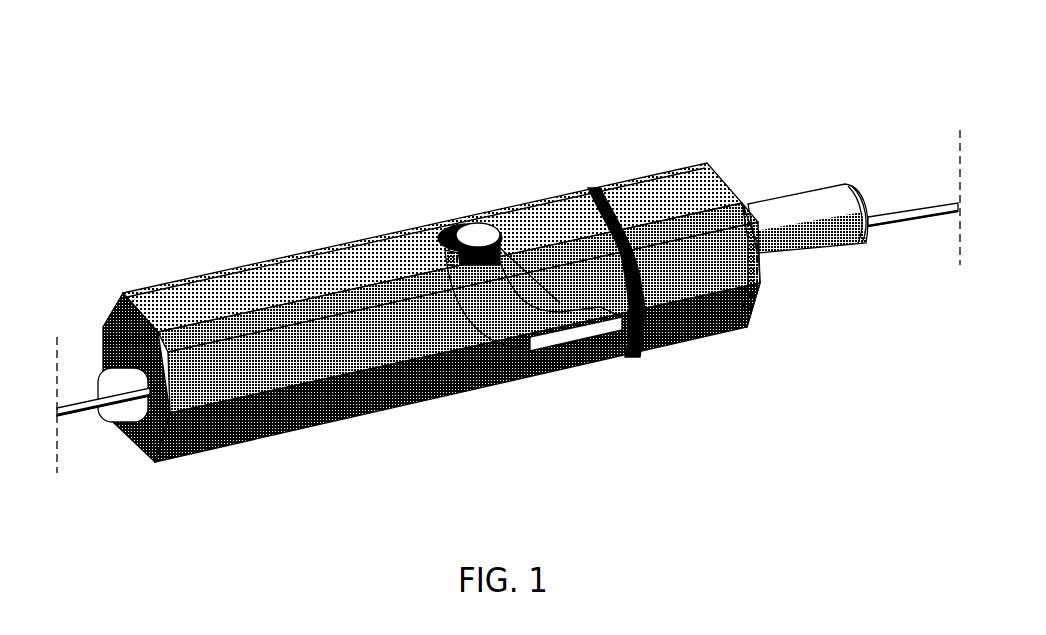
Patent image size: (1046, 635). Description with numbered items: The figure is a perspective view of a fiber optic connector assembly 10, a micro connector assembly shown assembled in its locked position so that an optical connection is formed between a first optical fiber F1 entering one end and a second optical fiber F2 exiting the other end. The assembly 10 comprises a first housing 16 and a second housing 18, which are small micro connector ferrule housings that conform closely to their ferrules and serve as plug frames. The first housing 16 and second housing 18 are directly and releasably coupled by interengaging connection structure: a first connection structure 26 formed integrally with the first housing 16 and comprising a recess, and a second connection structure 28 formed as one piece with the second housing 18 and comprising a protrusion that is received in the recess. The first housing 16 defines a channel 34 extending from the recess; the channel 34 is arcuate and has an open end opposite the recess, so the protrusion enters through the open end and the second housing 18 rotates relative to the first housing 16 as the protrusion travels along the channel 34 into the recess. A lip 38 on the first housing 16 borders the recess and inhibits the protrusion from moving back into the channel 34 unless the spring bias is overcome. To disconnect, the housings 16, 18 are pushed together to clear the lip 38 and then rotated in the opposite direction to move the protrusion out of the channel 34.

The fiber optic connector assembly 10 is at (507, 277).
The first housing 16 is at (408, 309).
The second housing 18 is at (595, 149).
The first connection structure 26 is at (444, 208).
The second connection structure 28 is at (443, 201).
The channel 34 is at (522, 322).
The lip 38 is at (603, 360).
The first optical fiber F1 is at (97, 392).
The second optical fiber F2 is at (907, 200).